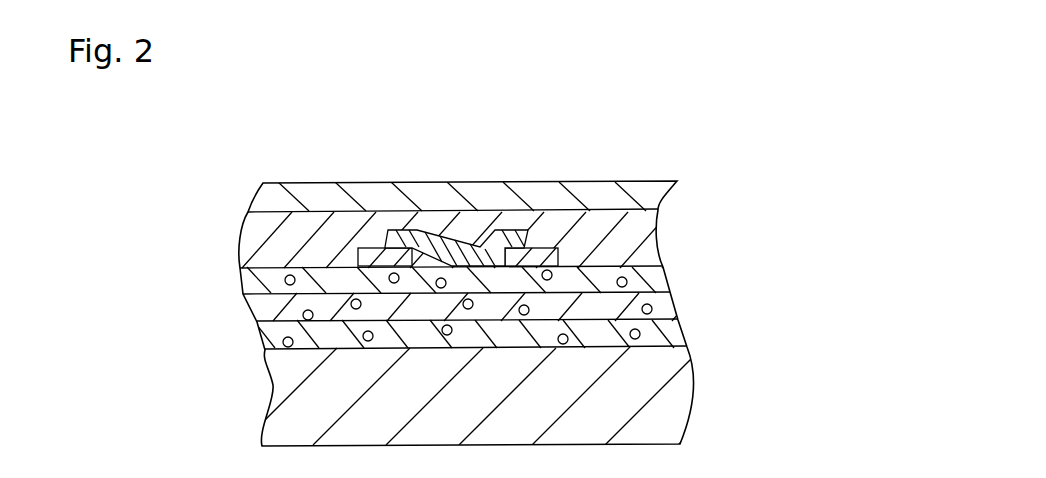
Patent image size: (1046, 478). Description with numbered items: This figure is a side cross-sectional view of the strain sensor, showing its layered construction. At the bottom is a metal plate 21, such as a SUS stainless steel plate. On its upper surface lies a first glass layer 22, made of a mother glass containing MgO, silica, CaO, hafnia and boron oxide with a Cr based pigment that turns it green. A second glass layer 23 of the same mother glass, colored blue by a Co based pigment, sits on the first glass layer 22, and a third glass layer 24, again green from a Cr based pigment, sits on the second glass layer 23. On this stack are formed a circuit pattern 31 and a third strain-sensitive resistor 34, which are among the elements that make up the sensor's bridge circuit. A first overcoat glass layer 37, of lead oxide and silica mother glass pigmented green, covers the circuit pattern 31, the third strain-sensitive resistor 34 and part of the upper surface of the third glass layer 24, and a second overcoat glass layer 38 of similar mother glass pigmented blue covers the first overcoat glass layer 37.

The metal plate 21 is at (695, 392).
The first glass layer 22 is at (685, 333).
The second glass layer 23 is at (675, 307).
The third glass layer 24 is at (663, 278).
The circuit pattern 31 is at (374, 248).
The third strain-sensitive resistor 34 is at (458, 241).
The first overcoat glass layer 37 is at (238, 242).
The second overcoat glass layer 38 is at (256, 196).